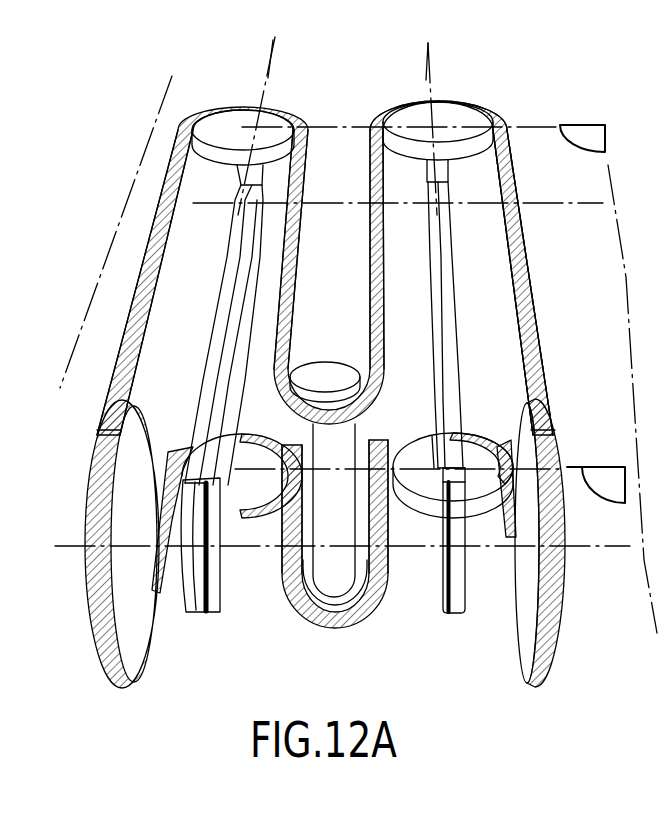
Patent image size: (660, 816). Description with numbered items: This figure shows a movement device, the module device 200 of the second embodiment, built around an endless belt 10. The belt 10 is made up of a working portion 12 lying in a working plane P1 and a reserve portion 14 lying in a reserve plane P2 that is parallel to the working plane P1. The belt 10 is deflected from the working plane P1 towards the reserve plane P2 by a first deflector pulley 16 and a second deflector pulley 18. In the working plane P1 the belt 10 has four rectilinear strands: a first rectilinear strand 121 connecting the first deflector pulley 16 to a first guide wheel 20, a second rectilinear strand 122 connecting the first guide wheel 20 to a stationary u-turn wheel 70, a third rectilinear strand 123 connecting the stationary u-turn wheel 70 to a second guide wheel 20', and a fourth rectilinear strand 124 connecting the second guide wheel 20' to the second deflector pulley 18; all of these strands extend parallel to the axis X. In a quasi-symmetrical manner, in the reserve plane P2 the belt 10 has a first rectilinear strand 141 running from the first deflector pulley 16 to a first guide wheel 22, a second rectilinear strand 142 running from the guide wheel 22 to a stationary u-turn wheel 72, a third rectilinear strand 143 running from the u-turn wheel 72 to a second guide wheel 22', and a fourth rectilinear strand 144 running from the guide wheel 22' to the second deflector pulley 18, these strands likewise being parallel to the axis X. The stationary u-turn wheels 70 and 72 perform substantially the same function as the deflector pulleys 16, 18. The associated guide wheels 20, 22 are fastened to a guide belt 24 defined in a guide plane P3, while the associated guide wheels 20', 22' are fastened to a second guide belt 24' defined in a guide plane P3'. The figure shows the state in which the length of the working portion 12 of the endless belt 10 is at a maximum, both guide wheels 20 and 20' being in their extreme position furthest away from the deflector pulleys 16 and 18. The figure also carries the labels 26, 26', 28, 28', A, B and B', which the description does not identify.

The endless belt 10 is at (543, 347).
The working portion 12 is at (525, 245).
The reserve portion 14 is at (370, 620).
The first deflector pulley 16 is at (133, 653).
The second deflector pulley 18 is at (525, 640).
The first guide wheel 20 is at (242, 111).
The second guide wheel 20' is at (438, 112).
The first guide wheel 22 is at (260, 476).
The second guide wheel 22' is at (453, 458).
The guide belt 24 is at (224, 335).
The second guide belt 24' is at (460, 325).
The first piston foot 26 is at (205, 568).
The second piston foot 26' is at (437, 558).
The first piston neck 28 is at (291, 173).
The second piston neck 28' is at (386, 189).
The stationary u-turn wheel 70 is at (325, 377).
The stationary u-turn wheel 72 is at (343, 598).
The first rectilinear strand 121 is at (165, 208).
The second rectilinear strand 122 is at (293, 247).
The third rectilinear strand 123 is at (372, 292).
The fourth rectilinear strand 124 is at (522, 293).
The first rectilinear strand 141 is at (180, 478).
The second rectilinear strand 142 is at (285, 563).
The third rectilinear strand 143 is at (383, 549).
The fourth rectilinear strand 144 is at (505, 527).
The module device 200 is at (522, 100).
The section plane A is at (595, 548).
The section plane B is at (342, 336).
The section plane B' is at (398, 180).
The axis X is at (170, 94).
The working plane P1 is at (588, 130).
The reserve plane P2 is at (610, 467).
The guide plane P3 is at (256, 111).
The guide plane P3' is at (444, 111).